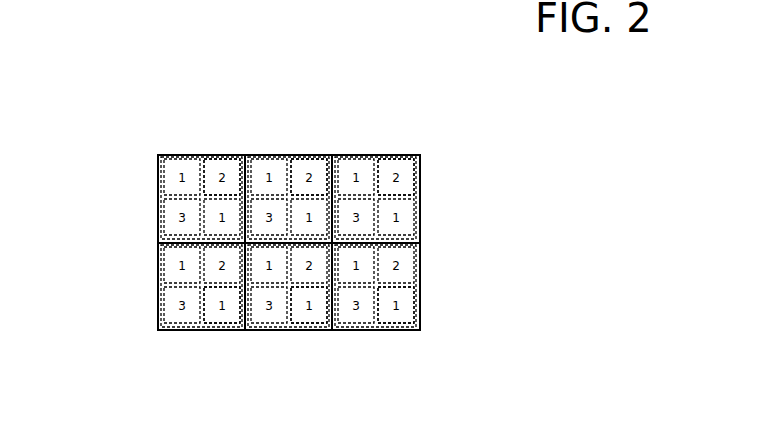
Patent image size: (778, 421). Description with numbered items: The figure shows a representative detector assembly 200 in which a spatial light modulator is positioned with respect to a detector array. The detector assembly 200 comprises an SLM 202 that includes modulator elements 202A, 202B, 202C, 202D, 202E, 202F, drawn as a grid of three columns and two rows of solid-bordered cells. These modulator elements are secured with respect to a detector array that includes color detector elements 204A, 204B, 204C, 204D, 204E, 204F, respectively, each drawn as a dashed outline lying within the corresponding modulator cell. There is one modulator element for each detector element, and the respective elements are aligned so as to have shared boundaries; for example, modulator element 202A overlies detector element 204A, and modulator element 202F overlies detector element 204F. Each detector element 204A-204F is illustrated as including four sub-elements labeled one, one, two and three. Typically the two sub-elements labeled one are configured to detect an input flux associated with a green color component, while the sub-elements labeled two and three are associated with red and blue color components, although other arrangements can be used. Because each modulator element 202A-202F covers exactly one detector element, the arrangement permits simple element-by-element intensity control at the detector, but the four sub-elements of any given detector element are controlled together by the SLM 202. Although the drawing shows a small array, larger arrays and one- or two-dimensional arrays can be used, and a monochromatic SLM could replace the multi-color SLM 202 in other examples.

The detector assembly 200 is at (514, 196).
The SLM 202 is at (158, 157).
The modulator element 202A is at (158, 208).
The modulator element 202B is at (291, 158).
The modulator element 202C is at (420, 197).
The modulator element 202D is at (158, 312).
The modulator element 202E is at (293, 332).
The modulator element 202F is at (420, 293).
The color detector element 204A is at (207, 167).
The color detector element 204B is at (292, 177).
The color detector element 204C is at (372, 172).
The color detector element 204D is at (203, 308).
The color detector element 204E is at (320, 315).
The color detector element 204F is at (402, 318).